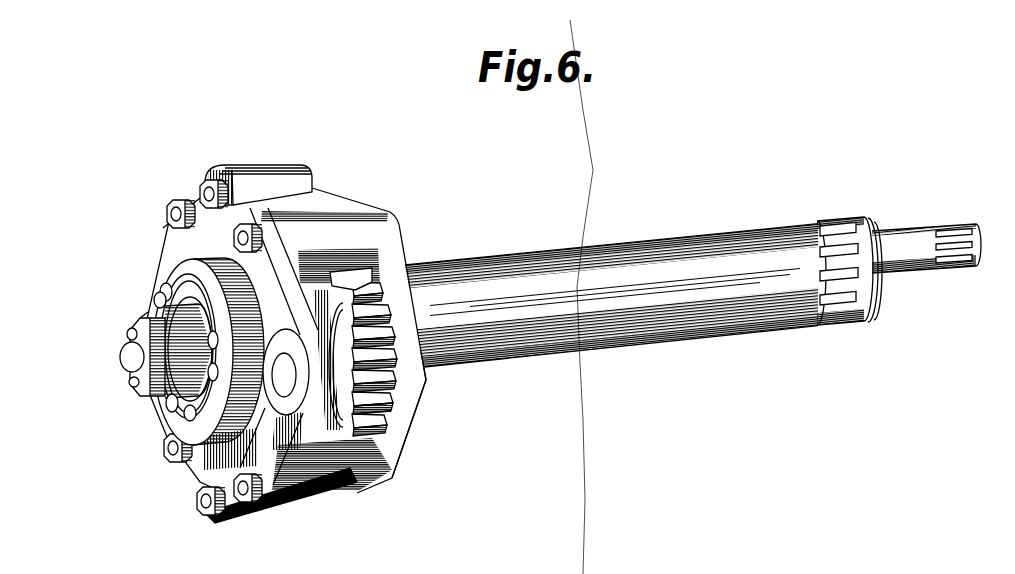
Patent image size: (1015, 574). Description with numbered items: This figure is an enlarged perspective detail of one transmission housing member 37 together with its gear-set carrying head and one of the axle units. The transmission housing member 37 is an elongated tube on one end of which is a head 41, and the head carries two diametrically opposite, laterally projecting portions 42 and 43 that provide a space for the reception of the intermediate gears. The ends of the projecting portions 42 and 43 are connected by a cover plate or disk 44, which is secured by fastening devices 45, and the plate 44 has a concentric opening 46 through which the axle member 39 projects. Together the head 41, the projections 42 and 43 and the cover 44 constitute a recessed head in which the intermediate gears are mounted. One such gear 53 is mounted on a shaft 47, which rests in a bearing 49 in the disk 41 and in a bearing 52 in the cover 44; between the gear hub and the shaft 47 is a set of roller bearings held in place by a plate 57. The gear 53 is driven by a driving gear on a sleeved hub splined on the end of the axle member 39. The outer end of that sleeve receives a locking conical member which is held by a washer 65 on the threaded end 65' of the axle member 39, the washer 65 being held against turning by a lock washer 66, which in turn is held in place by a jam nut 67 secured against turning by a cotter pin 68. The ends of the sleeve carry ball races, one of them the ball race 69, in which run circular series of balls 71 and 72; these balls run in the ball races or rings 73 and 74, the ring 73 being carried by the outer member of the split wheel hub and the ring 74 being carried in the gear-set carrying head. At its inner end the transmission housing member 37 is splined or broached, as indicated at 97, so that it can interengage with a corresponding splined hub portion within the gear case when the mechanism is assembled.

The transmission housing member 37 is at (708, 237).
The axle member 39 is at (125, 358).
The head 41 is at (387, 222).
The laterally projecting portion 42 is at (335, 237).
The laterally projecting portion 43 is at (360, 492).
The plate or disk 44 is at (166, 240).
The fastening devices 45 is at (200, 192).
The concentric opening 46 is at (290, 378).
The shaft 47 is at (378, 440).
The bearing 49 is at (415, 377).
The bearing 52 is at (383, 470).
The gear 53 is at (397, 412).
The plate 57 is at (392, 422).
The washer 65 is at (111, 266).
The threaded end 65' is at (87, 326).
The lock washer 66 is at (140, 320).
The jam nut 67 is at (137, 333).
The cotter pin 68 is at (130, 385).
The ball race 69 is at (157, 407).
The balls 71 is at (167, 415).
The balls 72 is at (343, 275).
The ball race or ring 73 is at (173, 427).
The ball race or ring 74 is at (367, 280).
The splined or broached end 97 is at (832, 221).